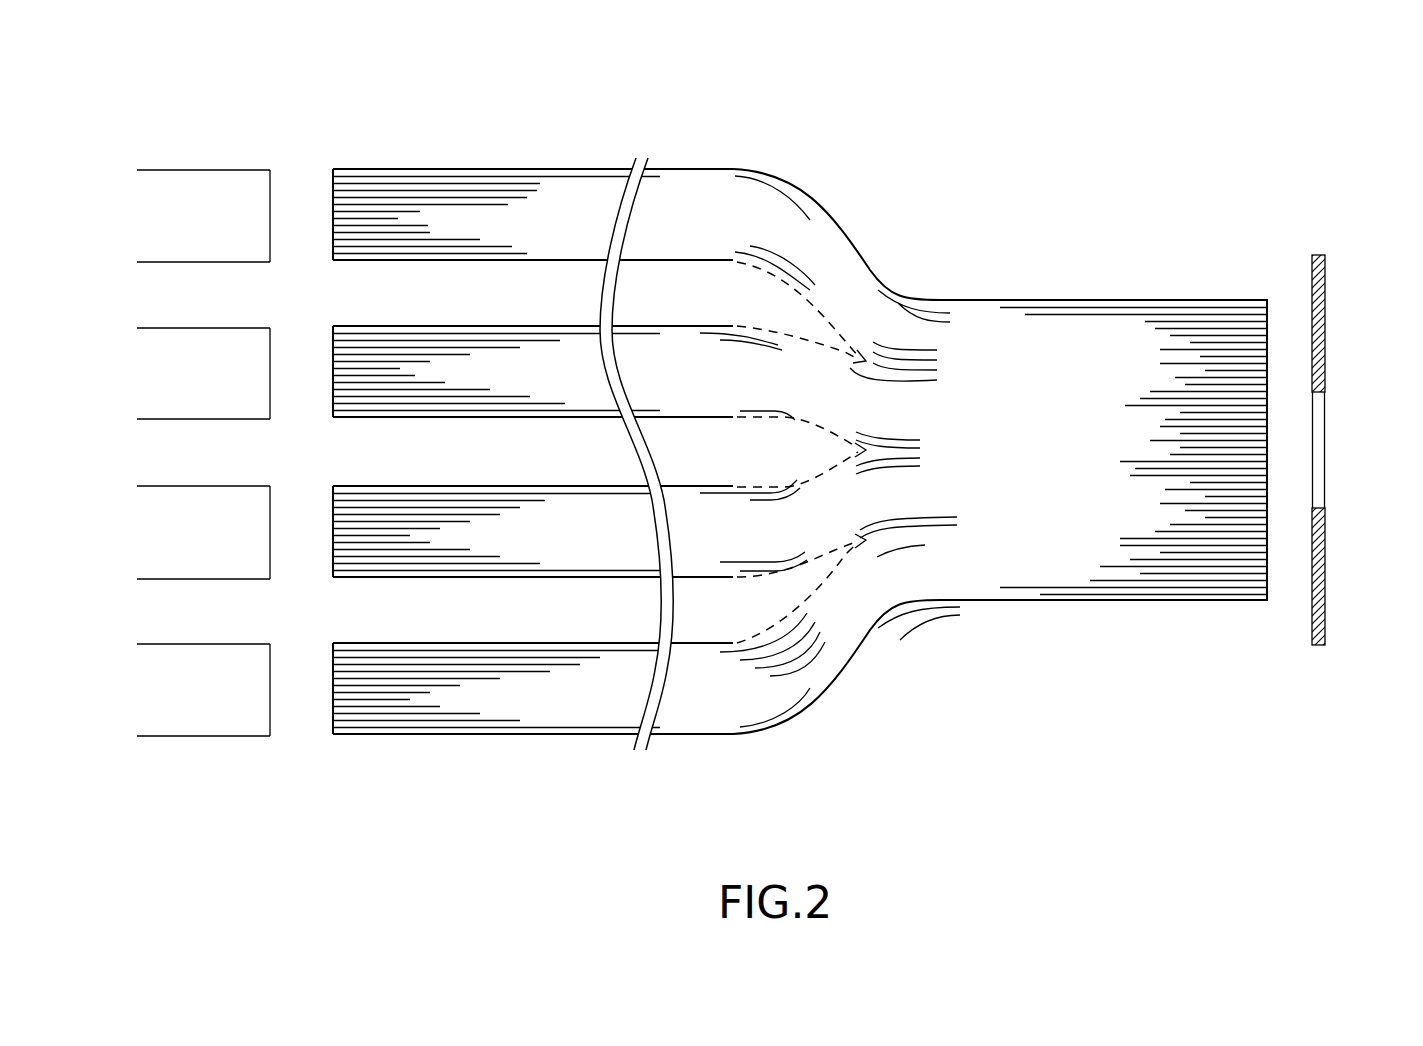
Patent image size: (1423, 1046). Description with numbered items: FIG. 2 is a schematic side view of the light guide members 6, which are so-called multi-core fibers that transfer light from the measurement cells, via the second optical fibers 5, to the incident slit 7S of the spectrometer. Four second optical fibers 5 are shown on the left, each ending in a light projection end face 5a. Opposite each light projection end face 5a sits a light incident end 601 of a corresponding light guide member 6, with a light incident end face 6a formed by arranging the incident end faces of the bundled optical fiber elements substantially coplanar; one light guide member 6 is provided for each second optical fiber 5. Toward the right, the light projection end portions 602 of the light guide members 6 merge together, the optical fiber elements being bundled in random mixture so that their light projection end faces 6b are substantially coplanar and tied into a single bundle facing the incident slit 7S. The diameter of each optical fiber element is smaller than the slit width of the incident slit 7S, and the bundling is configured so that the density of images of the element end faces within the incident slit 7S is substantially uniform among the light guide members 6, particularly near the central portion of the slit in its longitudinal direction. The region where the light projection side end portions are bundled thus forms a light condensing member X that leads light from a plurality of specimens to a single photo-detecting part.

The second optical fiber 5 is at (165, 170).
The light projection end face 5a is at (270, 214).
The light guide member 6 is at (502, 169).
The light incident end face 6a is at (333, 209).
The light projection end face 6b is at (1267, 437).
The light incident end 601 is at (358, 169).
The light projection end portion 602 is at (1233, 298).
The incident slit 7S is at (1318, 253).
The light condensing member X is at (803, 170).